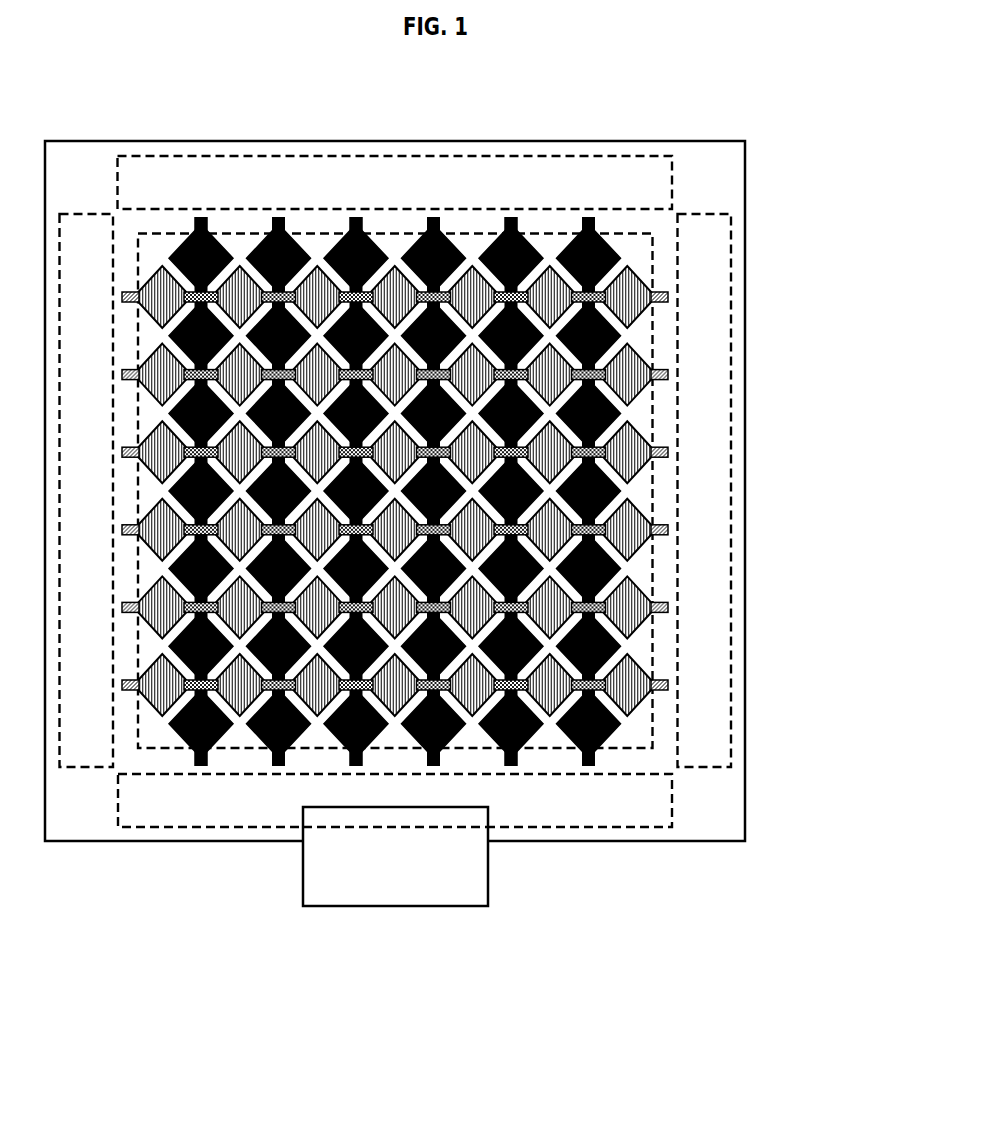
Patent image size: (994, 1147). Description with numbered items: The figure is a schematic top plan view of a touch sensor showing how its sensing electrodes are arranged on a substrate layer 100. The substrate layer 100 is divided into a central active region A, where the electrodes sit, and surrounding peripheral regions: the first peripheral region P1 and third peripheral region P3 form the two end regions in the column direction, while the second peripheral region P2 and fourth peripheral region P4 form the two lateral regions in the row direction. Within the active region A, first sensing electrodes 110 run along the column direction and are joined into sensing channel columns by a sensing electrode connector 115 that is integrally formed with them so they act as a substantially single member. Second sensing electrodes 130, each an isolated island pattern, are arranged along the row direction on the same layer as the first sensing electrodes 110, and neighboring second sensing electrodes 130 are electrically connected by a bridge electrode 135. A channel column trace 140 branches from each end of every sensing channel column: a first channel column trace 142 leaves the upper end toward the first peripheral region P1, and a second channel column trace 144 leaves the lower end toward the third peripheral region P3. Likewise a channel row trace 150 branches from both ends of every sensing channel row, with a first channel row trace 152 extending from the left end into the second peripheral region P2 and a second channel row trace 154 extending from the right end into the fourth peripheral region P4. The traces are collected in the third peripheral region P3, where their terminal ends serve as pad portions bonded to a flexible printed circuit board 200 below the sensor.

The substrate layer 100 is at (737, 805).
The first peripheral region P1 is at (289, 146).
The second peripheral region P2 is at (83, 203).
The third peripheral region P3 is at (112, 823).
The fourth peripheral region P4 is at (703, 203).
The active region A is at (668, 254).
The first sensing electrodes 110 is at (610, 644).
The sensing electrode connector 115 is at (591, 615).
The second sensing electrodes 130 is at (638, 523).
The bridge electrode 135 is at (595, 534).
The channel column trace 140 is at (418, 496).
The first channel column trace 142 is at (588, 217).
The second channel column trace 144 is at (588, 767).
The channel row trace 150 is at (444, 598).
The first channel row trace 152 is at (128, 691).
The second channel row trace 154 is at (660, 691).
The flexible printed circuit board 200 is at (395, 907).